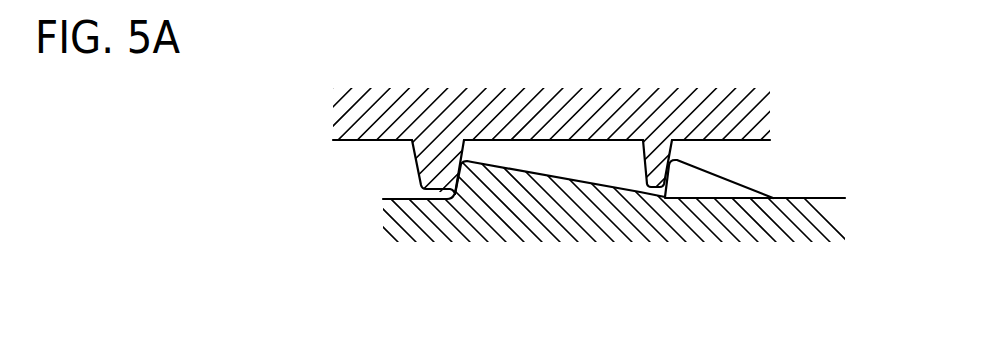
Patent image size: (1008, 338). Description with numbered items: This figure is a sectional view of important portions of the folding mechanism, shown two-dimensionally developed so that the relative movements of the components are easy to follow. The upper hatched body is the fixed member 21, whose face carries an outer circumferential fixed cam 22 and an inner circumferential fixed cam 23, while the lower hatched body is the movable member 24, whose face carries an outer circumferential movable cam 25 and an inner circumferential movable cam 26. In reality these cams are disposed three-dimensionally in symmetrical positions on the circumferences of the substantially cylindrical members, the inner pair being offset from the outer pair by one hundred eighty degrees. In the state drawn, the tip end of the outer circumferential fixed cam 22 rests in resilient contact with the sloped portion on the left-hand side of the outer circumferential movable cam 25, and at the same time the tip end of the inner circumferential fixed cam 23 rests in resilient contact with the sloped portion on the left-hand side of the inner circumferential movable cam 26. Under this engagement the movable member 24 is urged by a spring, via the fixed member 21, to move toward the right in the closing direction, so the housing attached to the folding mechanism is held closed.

The fixed member 21 is at (772, 108).
The outer circumferential fixed cam 22 is at (438, 162).
The inner circumferential fixed cam 23 is at (655, 165).
The movable member 24 is at (828, 228).
The outer circumferential movable cam 25 is at (473, 170).
The inner circumferential movable cam 26 is at (682, 175).